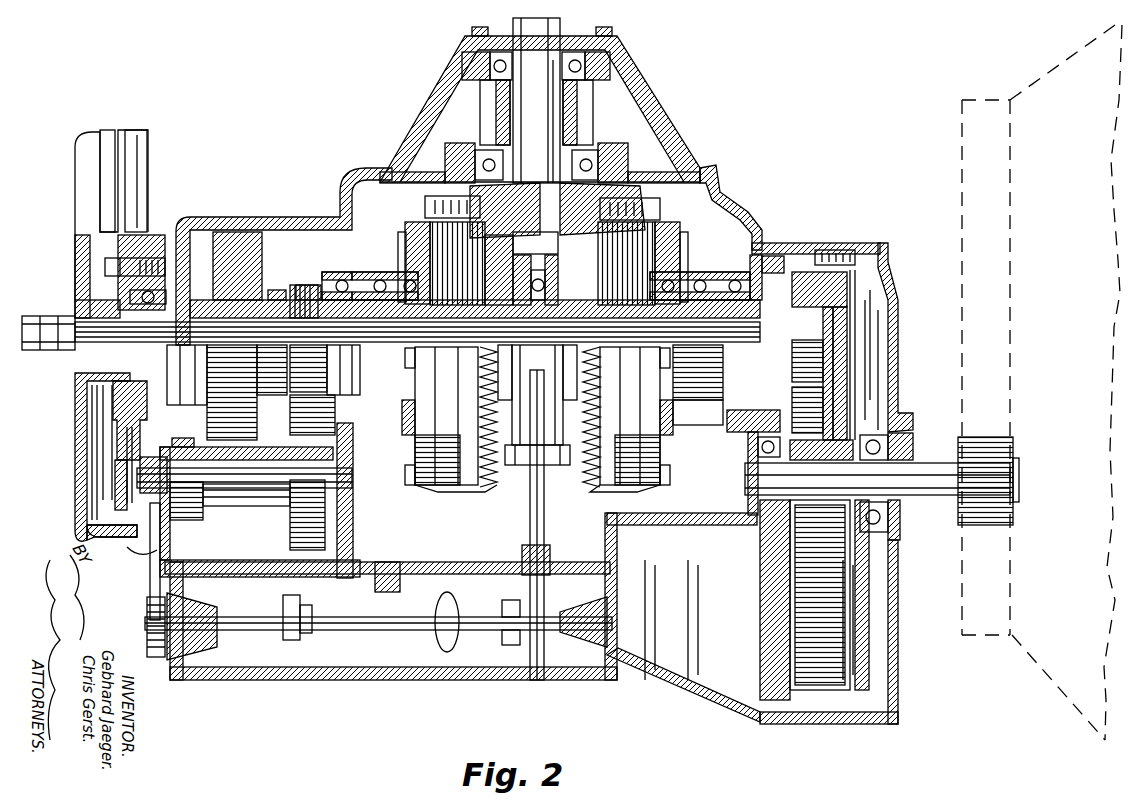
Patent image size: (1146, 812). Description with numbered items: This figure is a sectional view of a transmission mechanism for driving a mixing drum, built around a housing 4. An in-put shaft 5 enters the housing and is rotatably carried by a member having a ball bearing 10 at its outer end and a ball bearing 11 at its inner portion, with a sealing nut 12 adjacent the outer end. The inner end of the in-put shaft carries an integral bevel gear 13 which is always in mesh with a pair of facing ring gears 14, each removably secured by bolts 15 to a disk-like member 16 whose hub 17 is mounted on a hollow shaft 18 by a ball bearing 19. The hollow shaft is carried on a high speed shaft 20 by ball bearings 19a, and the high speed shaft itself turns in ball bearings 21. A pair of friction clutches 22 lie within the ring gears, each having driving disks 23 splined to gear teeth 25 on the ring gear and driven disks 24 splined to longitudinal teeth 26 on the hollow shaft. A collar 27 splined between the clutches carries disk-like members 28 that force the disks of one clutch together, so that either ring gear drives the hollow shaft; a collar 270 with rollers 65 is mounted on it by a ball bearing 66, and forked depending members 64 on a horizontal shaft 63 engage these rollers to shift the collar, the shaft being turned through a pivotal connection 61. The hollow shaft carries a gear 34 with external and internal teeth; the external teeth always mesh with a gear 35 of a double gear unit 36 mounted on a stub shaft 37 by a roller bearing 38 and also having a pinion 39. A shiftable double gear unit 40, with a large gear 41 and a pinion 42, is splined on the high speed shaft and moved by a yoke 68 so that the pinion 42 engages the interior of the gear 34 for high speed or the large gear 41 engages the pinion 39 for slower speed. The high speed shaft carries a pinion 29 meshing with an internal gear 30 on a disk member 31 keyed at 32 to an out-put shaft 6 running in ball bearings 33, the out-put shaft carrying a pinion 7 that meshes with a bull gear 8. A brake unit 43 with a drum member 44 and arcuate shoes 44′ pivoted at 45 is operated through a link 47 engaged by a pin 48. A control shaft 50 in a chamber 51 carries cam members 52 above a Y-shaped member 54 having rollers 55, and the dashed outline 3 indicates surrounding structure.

The dome housing / tractor body outline 3 is at (648, 118).
The housing 4 is at (262, 224).
The in-put shaft 5 is at (545, 36).
The out-put shaft 6 is at (933, 470).
The pinion 7 is at (982, 460).
The bull gear 8 is at (965, 122).
The ball bearing 10 is at (490, 86).
The ball bearing 11 is at (490, 160).
The sealing nut 12 is at (508, 40).
The bevel gear 13 is at (518, 186).
The ring gears 14 is at (605, 200).
The bolts 15 is at (658, 209).
The disk-like member 16 is at (668, 238).
The hub 17 is at (680, 254).
The hollow shaft 18 is at (328, 288).
The ball bearing 19 is at (385, 300).
The ball bearings 19a is at (346, 300).
The high speed shaft 20 is at (697, 330).
The ball bearings 21 is at (152, 300).
The clutches 22 is at (418, 232).
The driving disks 23 is at (410, 250).
The driven disks 24 is at (455, 306).
The gear teeth 25 is at (470, 196).
The teeth 26 is at (600, 306).
The collar 27 is at (590, 394).
The collar 270 is at (525, 425).
The disk-like members 28 is at (500, 306).
The pinion 29 is at (825, 360).
The internal gear 30 is at (830, 410).
The disk member 31 is at (740, 515).
The key 32 is at (720, 520).
The ball bearings 33 is at (882, 522).
The gear 34 is at (345, 383).
The gear 35 is at (326, 520).
The double gear unit 36 is at (262, 500).
The stub shaft 37 is at (342, 478).
The roller bearing 38 is at (222, 488).
The pinion 39 is at (183, 438).
The double gear unit 40 is at (262, 382).
The large gear 41 is at (216, 256).
The pinion 42 is at (272, 290).
The brake unit 43 is at (85, 168).
The drum member 44 is at (78, 276).
The arcuate shoes 44′ is at (108, 450).
The pivot 45 is at (130, 262).
The link 47 is at (150, 572).
The pin 48 is at (145, 644).
The shaft 50 is at (242, 630).
The chamber 51 is at (330, 668).
The cam members 52 is at (283, 598).
The Y-shaped member 54 is at (426, 635).
The roller 55 is at (296, 612).
The pivotal connection 61 is at (511, 648).
The shaft 63 is at (530, 536).
The depending members 64 is at (548, 466).
The rollers 65 is at (528, 306).
The ball bearing 66 is at (542, 300).
The yoke 68 is at (262, 303).